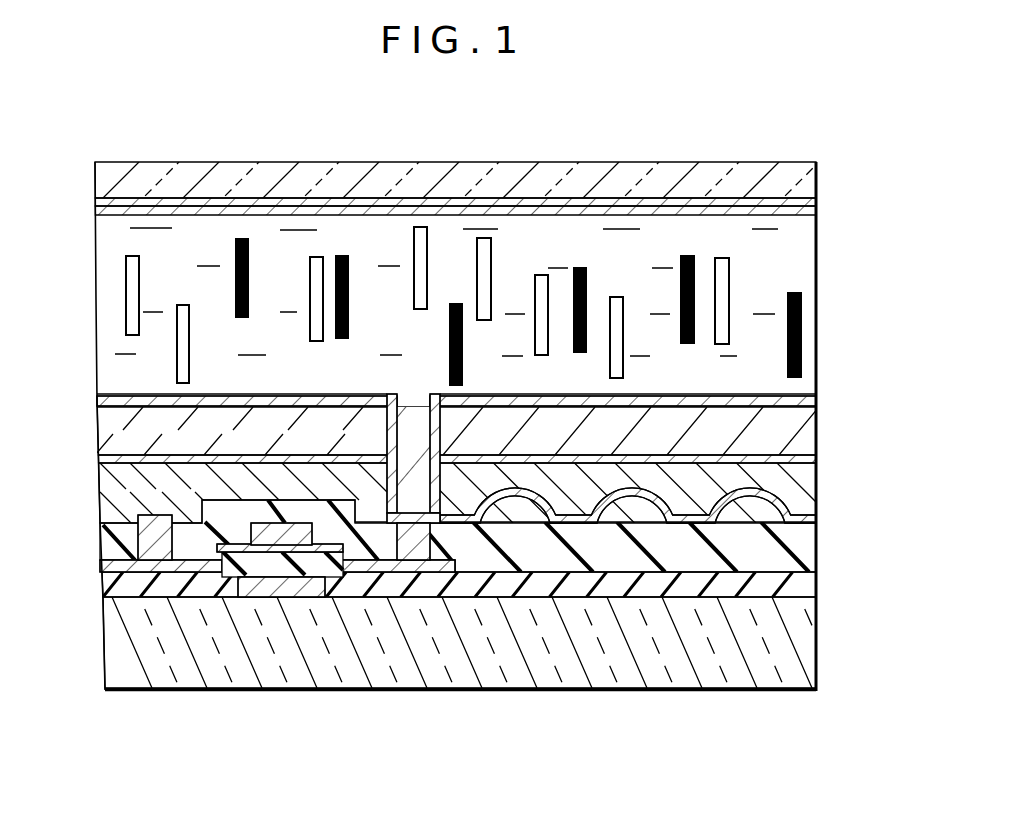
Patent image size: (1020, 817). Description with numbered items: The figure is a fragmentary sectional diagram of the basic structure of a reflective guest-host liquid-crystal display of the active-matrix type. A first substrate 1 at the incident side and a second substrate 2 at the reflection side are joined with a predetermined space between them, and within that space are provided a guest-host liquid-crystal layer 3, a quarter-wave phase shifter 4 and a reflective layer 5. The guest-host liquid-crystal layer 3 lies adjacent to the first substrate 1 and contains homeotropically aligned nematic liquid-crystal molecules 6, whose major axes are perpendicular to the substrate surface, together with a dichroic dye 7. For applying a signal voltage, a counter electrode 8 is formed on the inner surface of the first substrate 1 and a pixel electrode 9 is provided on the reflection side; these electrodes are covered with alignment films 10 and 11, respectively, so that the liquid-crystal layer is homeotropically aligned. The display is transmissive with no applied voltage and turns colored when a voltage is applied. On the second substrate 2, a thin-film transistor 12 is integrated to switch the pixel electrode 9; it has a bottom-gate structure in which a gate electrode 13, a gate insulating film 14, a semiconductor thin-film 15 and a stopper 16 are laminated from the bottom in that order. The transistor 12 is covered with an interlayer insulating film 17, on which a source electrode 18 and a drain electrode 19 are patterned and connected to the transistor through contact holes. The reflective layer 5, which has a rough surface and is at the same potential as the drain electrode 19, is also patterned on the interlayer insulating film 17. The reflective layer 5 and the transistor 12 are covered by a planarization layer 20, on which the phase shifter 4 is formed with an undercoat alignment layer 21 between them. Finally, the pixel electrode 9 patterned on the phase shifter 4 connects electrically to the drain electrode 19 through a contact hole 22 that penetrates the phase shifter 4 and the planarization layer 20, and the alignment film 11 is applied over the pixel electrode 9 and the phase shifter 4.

The first substrate 1 is at (803, 182).
The counter electrode 8 is at (815, 193).
The alignment film 10 is at (810, 218).
The guest-host liquid-crystal layer 3 is at (797, 248).
The liquid-crystal molecules 6 is at (125, 283).
The dichroic dye 7 is at (802, 305).
The alignment film 11 is at (808, 393).
The pixel electrode 9 is at (805, 410).
The λ/4 phase shifter 4 is at (803, 440).
The undercoat alignment layer 21 is at (805, 460).
The contact hole 22 is at (387, 432).
The planarization layer 20 is at (803, 482).
The reflective layer 5 is at (808, 508).
The interlayer insulating film 17 is at (805, 548).
The gate insulating film 14 is at (806, 587).
The second substrate 2 is at (800, 647).
The stopper 16 is at (262, 524).
The source electrode 18 is at (150, 545).
The semiconductor thin-film 15 is at (123, 567).
The gate electrode 13 is at (313, 598).
The thin-film transistor 12 is at (272, 612).
The drain electrode 19 is at (415, 598).